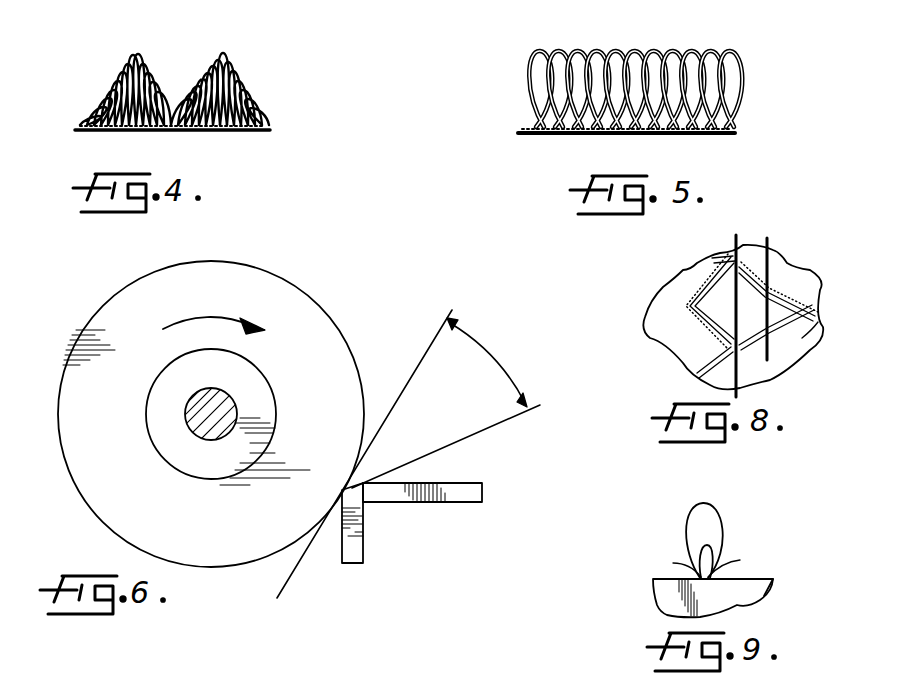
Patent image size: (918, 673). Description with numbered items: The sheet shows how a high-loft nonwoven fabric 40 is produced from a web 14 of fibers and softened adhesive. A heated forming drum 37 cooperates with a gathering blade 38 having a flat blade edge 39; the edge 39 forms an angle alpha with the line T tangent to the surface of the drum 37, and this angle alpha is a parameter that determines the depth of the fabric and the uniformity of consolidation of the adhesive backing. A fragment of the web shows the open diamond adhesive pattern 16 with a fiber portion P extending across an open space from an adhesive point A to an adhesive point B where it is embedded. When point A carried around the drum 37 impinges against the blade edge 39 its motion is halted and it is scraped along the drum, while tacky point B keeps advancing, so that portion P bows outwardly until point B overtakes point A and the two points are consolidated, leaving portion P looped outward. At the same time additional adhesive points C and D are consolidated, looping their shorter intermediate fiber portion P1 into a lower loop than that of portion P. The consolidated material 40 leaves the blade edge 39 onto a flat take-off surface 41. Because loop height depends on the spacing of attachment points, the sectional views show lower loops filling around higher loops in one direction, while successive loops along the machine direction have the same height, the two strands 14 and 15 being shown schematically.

In FIG. 8, the web 14 is at (768, 357).
In FIG. 8, the yarn strand 15 is at (787, 262).
In FIG. 4, the adhesive pattern 16 is at (251, 133).
In FIG. 5, the adhesive pattern 16 is at (566, 134).
In FIG. 8, the adhesive pattern 16 is at (684, 290).
In FIG. 6, the drum 37 is at (300, 312).
In FIG. 6, the gathering blade 38 is at (364, 553).
In FIG. 9, the gathering blade 38 is at (657, 603).
In FIG. 6, the blade edge 39 is at (368, 470).
In FIG. 9, the blade edge 39 is at (773, 579).
In FIG. 4, the nonwoven fabric 40 is at (178, 53).
In FIG. 5, the nonwoven fabric 40 is at (640, 38).
In FIG. 6, the take-off surface 41 is at (445, 498).
In FIG. 4, the fiber portion P is at (218, 60).
In FIG. 5, the fiber portion P is at (703, 62).
In FIG. 8, the fiber portion P is at (728, 312).
In FIG. 9, the fiber portion P is at (718, 510).
In FIG. 4, the intermediate fiber portion P1 is at (247, 94).
In FIG. 8, the intermediate fiber portion P1 is at (818, 340).
In FIG. 9, the intermediate fiber portion P1 is at (713, 542).
In FIG. 8, the point of adhesive attachment A is at (703, 358).
In FIG. 9, the point of adhesive attachment A is at (677, 566).
In FIG. 8, the point of adhesive attachment B is at (722, 264).
In FIG. 9, the point of adhesive attachment B is at (731, 566).
In FIG. 8, the adhesive point C is at (778, 291).
In FIG. 8, the adhesive point D is at (776, 328).
In FIG. 6, the tangent line T is at (427, 341).
In FIG. 6, the blade edge angle alpha is at (487, 362).